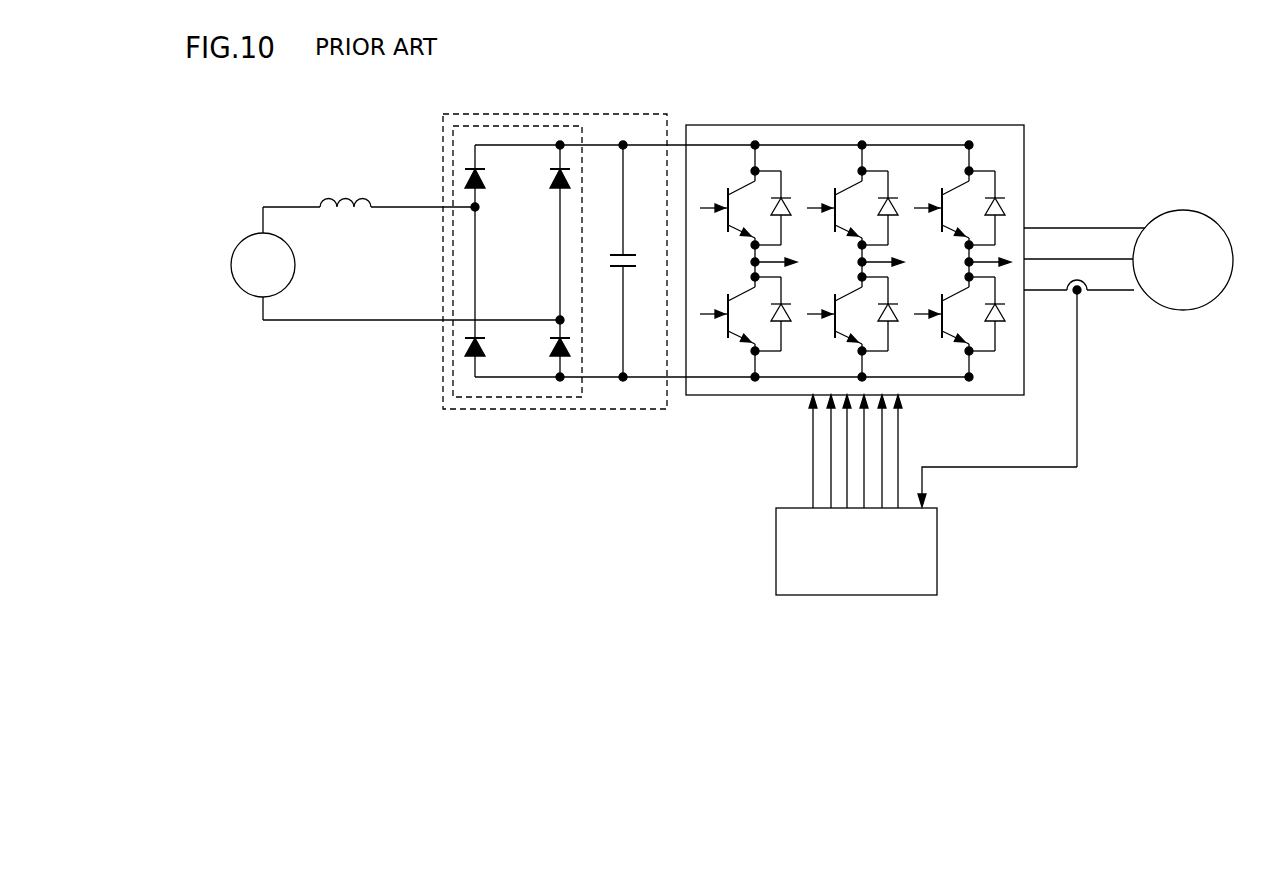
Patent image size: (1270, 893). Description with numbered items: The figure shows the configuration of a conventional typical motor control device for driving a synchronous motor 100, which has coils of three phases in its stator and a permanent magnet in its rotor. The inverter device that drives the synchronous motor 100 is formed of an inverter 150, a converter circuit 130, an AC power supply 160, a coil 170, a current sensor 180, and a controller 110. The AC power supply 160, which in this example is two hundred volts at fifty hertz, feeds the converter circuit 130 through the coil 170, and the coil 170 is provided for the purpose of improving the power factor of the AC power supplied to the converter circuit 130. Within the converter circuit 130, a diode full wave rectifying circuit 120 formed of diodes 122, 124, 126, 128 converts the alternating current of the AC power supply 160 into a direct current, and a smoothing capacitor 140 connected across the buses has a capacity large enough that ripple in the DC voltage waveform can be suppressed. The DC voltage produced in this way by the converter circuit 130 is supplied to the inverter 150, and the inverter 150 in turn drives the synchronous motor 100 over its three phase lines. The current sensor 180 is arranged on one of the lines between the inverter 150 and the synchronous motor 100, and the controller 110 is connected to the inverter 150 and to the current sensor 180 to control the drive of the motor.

The synchronous motor 100 is at (1204, 213).
The controller 110 is at (937, 552).
The diode full wave rectifying circuit 120 is at (508, 126).
The diode 122 is at (463, 177).
The diode 124 is at (463, 346).
The diode 126 is at (548, 178).
The diode 128 is at (548, 347).
The converter circuit 130 is at (607, 114).
The smoothing capacitor 140 is at (615, 251).
The inverter 150 is at (982, 123).
The AC power supply 160 is at (240, 241).
The coil 170 is at (346, 197).
The current sensor 180 is at (1082, 294).